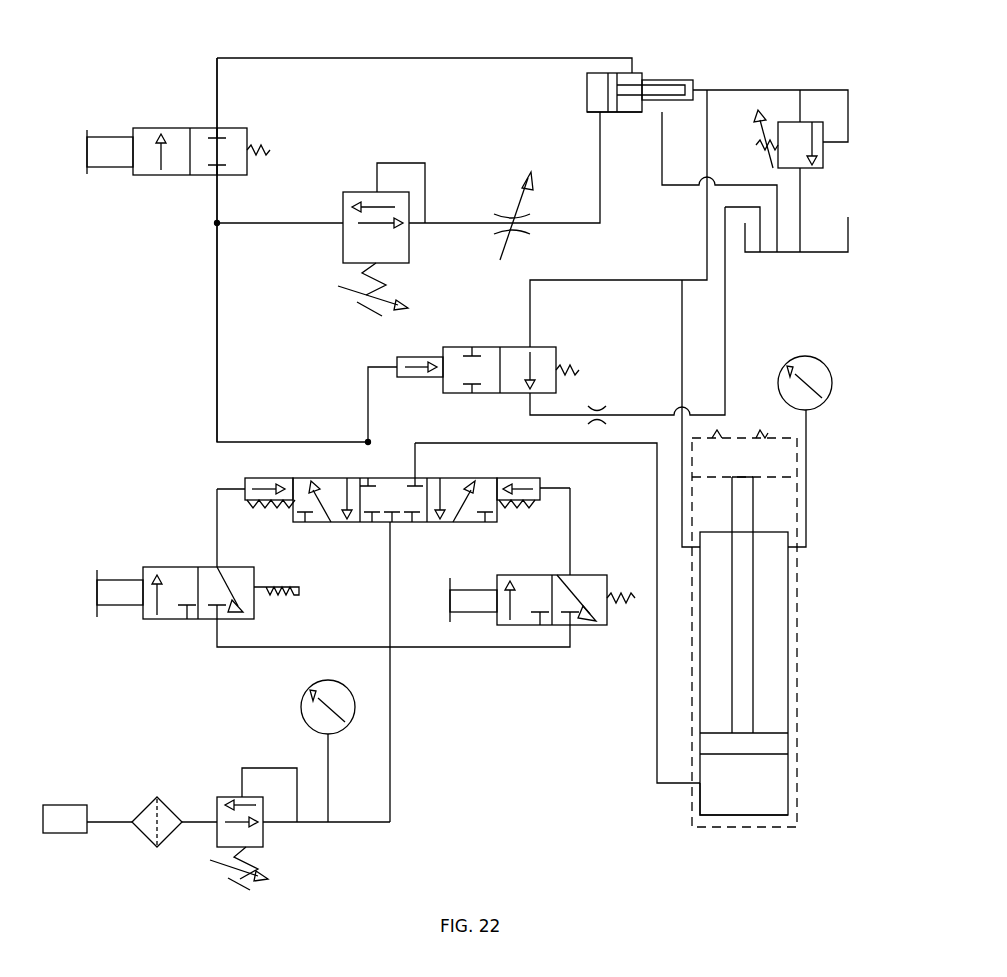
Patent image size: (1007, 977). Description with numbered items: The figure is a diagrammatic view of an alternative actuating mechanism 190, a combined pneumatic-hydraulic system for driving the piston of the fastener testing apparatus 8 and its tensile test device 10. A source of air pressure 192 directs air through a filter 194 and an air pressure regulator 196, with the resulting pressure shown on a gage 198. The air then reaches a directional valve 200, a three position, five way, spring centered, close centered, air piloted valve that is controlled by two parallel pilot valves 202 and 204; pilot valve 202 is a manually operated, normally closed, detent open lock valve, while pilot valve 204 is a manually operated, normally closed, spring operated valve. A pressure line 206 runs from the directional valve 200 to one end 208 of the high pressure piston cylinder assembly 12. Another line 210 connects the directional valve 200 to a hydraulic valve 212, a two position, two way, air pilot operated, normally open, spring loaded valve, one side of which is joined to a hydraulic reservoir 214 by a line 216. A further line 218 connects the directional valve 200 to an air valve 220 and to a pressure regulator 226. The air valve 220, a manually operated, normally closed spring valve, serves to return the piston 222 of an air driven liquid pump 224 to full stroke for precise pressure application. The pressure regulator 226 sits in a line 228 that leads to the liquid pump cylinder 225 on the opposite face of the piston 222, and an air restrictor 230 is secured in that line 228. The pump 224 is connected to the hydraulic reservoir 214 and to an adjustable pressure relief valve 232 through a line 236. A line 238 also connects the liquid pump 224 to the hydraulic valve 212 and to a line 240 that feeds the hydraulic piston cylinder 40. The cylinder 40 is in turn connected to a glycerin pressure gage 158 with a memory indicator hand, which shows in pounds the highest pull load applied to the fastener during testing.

The fastener testing apparatus 8 is at (815, 511).
The tensile test device 10 is at (724, 470).
The high pressure piston cylinder assembly 12 is at (800, 690).
The cylinder 40 is at (781, 647).
The pressure gage 158 is at (832, 378).
The actuating mechanism 190 is at (202, 352).
The source of air pressure 192 is at (70, 834).
The filter 194 is at (152, 801).
The air pressure regulator 196 is at (268, 832).
The gage 198 is at (304, 718).
The directional valve 200 is at (247, 479).
The pilot valve 202 is at (190, 620).
The pilot valve 204 is at (580, 626).
The pressure line 206 is at (657, 747).
The end of piston cylinder assembly 208 is at (700, 808).
The line 210 is at (366, 402).
The hydraulic valve 212 is at (554, 350).
The hydraulic reservoir 214 is at (848, 228).
The line 216 is at (730, 345).
The line 218 is at (218, 296).
The air valve 220 is at (230, 128).
The piston 222 is at (615, 73).
The air driven liquid pump 224 is at (585, 88).
The liquid pump cylinder 225 is at (587, 112).
The pressure regulator 226 is at (352, 192).
The line 228 is at (465, 228).
The air restrictor 230 is at (520, 220).
The adjustable pressure relief valve 232 is at (662, 155).
The line 236 is at (790, 90).
The line 238 is at (708, 128).
The line 240 is at (682, 357).